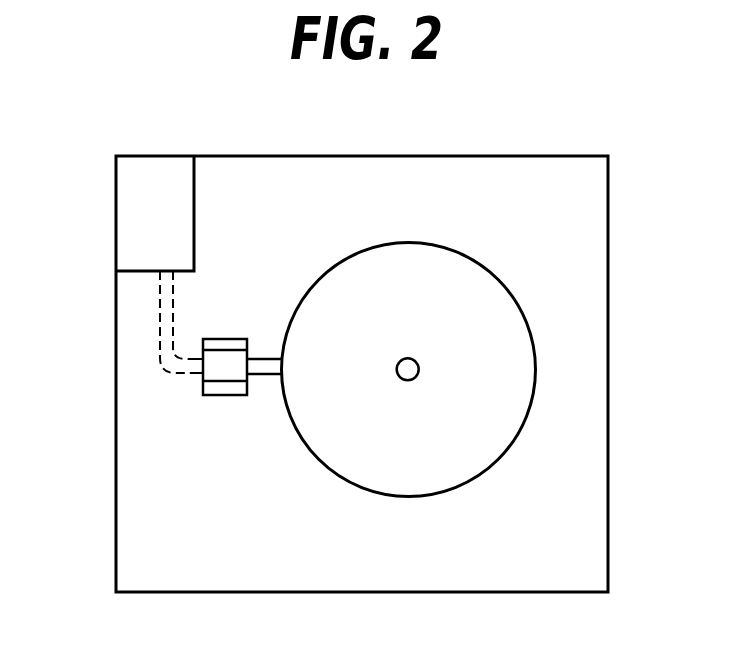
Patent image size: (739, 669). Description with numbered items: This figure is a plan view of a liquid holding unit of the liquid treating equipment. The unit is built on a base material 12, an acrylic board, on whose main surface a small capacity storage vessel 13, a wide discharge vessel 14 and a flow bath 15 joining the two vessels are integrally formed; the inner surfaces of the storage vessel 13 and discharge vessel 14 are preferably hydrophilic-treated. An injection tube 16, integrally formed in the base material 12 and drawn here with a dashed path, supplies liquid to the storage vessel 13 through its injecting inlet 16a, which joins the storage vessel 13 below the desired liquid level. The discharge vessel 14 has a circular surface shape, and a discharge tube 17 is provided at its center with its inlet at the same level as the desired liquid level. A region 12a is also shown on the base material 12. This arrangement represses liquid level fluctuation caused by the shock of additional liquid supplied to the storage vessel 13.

The base material 12 is at (578, 490).
The control board section 12a is at (140, 211).
The storage vessel 13 is at (233, 373).
The discharge vessel 14 is at (500, 333).
The flow bath 15 is at (263, 367).
The injection tube 16 is at (160, 334).
The injecting inlet 16a is at (205, 367).
The discharge tube 17 is at (406, 381).